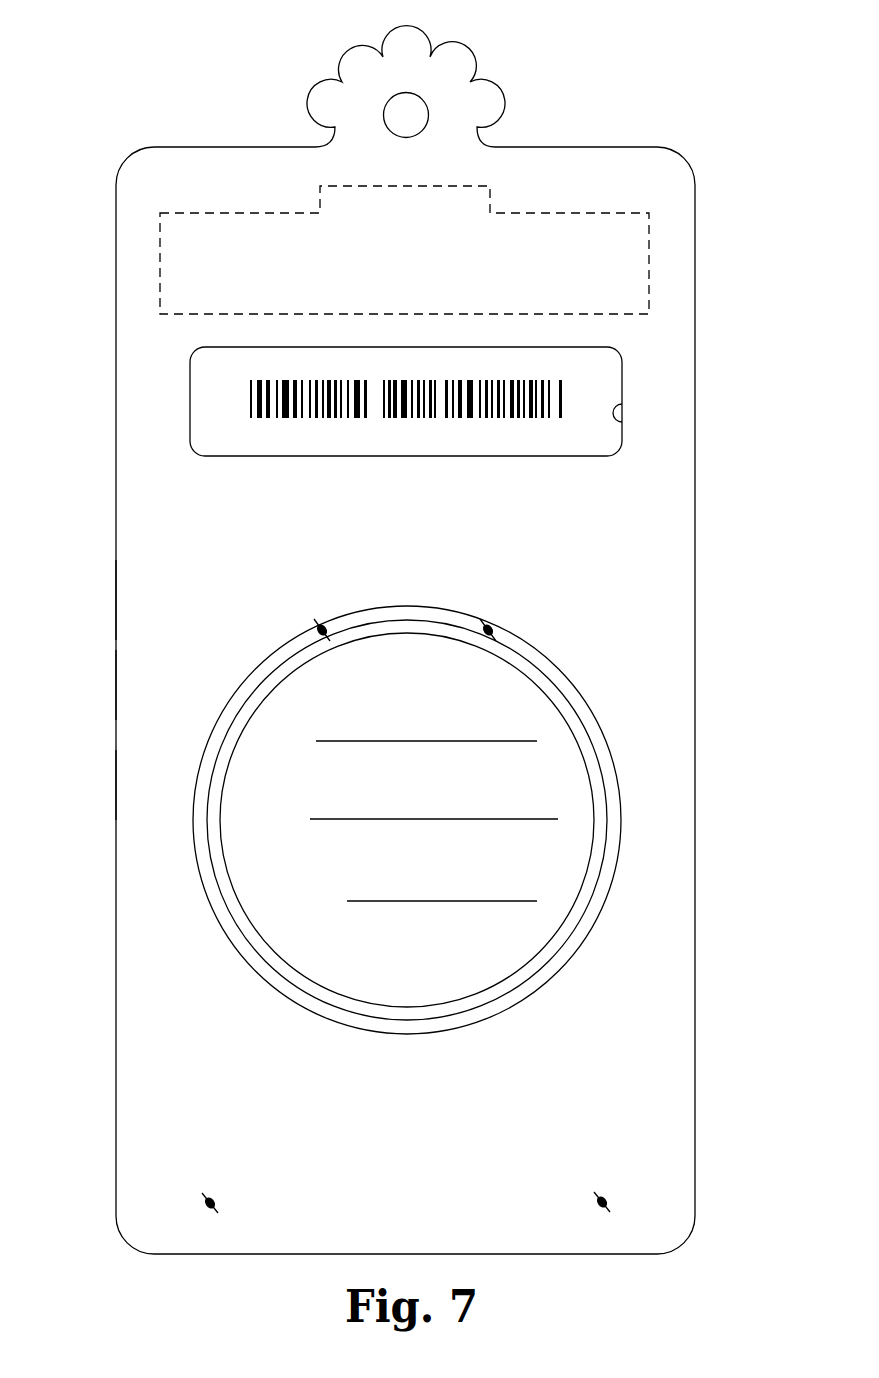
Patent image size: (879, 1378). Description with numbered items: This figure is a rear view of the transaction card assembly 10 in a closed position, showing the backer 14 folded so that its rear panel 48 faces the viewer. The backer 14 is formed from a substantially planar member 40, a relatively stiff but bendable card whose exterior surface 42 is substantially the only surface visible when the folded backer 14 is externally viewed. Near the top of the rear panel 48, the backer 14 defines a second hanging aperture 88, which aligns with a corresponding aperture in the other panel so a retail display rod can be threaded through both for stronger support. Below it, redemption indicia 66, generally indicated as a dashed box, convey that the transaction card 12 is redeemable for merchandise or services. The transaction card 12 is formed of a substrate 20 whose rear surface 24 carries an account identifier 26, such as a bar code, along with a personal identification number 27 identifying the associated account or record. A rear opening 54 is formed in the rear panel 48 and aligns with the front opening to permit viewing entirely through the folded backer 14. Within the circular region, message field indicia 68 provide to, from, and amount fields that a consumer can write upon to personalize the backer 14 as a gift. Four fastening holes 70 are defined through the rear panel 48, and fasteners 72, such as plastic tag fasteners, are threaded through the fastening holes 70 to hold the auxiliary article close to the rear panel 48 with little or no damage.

The transaction card assembly 10 is at (154, 67).
The transaction card 12 is at (582, 377).
The backer 14 is at (648, 393).
The substrate 20 is at (200, 368).
The rear surface 24 is at (208, 398).
The account identifier 26 is at (250, 405).
The personal identification number 27 is at (565, 437).
The substantially planar member 40 is at (145, 613).
The exterior surface 42 is at (145, 684).
The rear panel 48 is at (145, 784).
The rear opening 54 is at (622, 422).
The redemption indicia 66 is at (649, 256).
The message field indicia 68 is at (543, 802).
The fastening holes 70 is at (492, 645).
The fasteners 72 is at (490, 630).
The second hanging aperture 88 is at (400, 135).